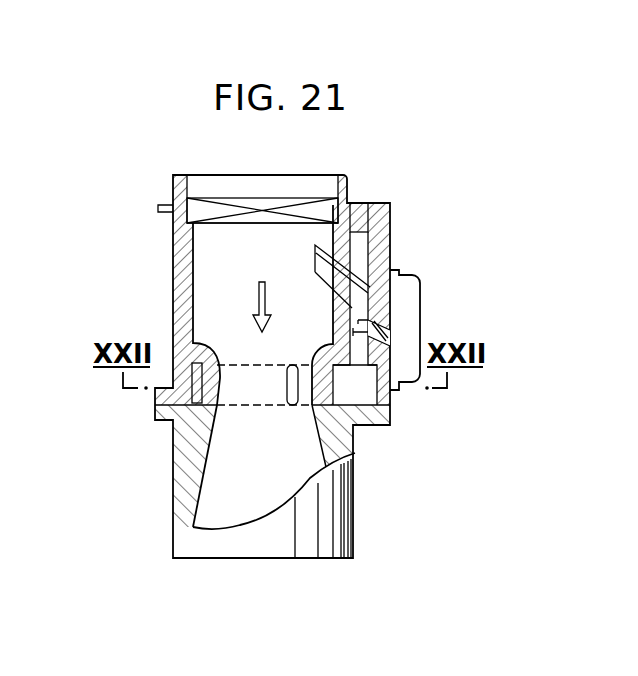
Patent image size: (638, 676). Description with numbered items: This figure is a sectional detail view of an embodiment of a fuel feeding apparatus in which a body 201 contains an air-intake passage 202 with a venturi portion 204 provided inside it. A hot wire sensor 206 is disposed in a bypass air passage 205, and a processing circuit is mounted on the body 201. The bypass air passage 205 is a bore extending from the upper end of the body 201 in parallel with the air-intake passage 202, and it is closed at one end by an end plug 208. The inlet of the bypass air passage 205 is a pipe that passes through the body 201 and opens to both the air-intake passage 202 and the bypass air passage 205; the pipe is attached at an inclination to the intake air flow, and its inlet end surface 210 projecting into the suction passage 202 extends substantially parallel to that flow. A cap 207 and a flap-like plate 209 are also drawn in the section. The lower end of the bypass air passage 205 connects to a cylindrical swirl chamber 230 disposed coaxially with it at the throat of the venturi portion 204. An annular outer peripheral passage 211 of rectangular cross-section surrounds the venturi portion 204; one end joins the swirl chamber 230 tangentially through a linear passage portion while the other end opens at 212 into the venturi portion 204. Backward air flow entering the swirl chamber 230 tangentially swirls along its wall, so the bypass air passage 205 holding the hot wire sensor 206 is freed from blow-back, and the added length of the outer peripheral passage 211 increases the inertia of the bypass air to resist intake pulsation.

The body 201 is at (181, 287).
The air-intake passage 202 is at (268, 507).
The venturi portion 204 is at (223, 378).
The bypass air passage 205 is at (363, 352).
The hot wire sensor 206 is at (393, 323).
The cap 207 is at (421, 313).
The end plug 208 is at (362, 210).
The flap plate 209 is at (313, 258).
The inlet end surface 210 is at (312, 270).
The outer peripheral passage 211 is at (193, 408).
The opening 212 is at (292, 406).
The swirl chamber 230 is at (366, 398).